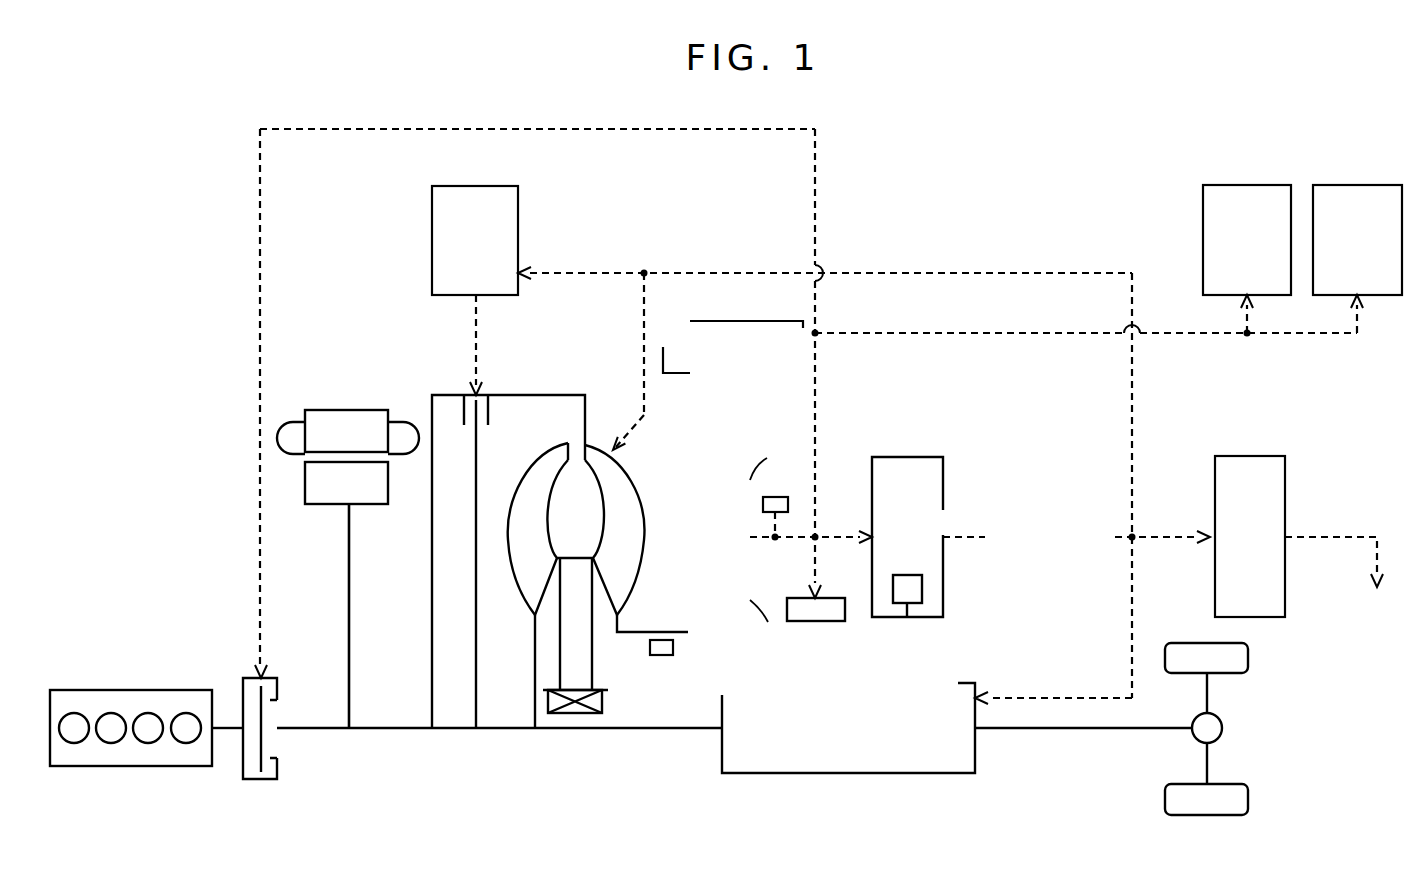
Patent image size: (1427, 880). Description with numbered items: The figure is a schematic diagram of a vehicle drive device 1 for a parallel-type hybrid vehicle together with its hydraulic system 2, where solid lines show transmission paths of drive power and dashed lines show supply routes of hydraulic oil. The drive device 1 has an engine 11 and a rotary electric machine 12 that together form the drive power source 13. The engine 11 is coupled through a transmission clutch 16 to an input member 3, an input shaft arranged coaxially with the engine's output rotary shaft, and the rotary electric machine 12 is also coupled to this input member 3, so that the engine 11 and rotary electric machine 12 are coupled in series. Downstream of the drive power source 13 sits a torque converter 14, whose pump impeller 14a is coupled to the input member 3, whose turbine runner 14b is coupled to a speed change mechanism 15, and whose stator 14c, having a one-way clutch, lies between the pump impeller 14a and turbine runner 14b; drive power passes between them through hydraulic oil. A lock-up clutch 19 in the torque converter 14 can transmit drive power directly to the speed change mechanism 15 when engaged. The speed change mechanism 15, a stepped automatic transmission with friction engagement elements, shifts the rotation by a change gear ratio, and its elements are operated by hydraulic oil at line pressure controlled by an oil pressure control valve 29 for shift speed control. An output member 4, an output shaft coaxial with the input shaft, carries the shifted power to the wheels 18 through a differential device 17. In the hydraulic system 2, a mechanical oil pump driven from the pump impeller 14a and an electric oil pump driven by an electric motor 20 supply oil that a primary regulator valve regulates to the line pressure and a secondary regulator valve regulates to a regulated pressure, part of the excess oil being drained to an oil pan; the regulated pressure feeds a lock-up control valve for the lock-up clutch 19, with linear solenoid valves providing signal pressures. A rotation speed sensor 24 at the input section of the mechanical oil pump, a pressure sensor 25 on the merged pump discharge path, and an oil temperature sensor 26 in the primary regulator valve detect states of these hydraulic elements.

The vehicle drive device 1 is at (505, 748).
The hydraulic system 2 is at (876, 247).
The input member 3 is at (390, 730).
The output member 4 is at (1124, 730).
The engine 11 is at (116, 690).
The rotary electric machine 12 is at (345, 410).
The drive power source 13 is at (234, 548).
The torque converter 14 is at (601, 584).
The pump impeller 14a is at (635, 508).
The turbine runner 14b is at (523, 512).
The stator 14c is at (593, 678).
The speed change mechanism 15 is at (857, 775).
The transmission clutch 16 is at (261, 781).
The differential device 17 is at (1222, 732).
The wheels 18 is at (1250, 658).
The lock-up clutch 19 is at (488, 413).
The electric motor 20 is at (735, 321).
The rotation speed sensor 24 is at (660, 656).
The pressure sensor 25 is at (775, 492).
The oil temperature sensor 26 is at (916, 564).
The oil pressure control valve 29 is at (840, 637).